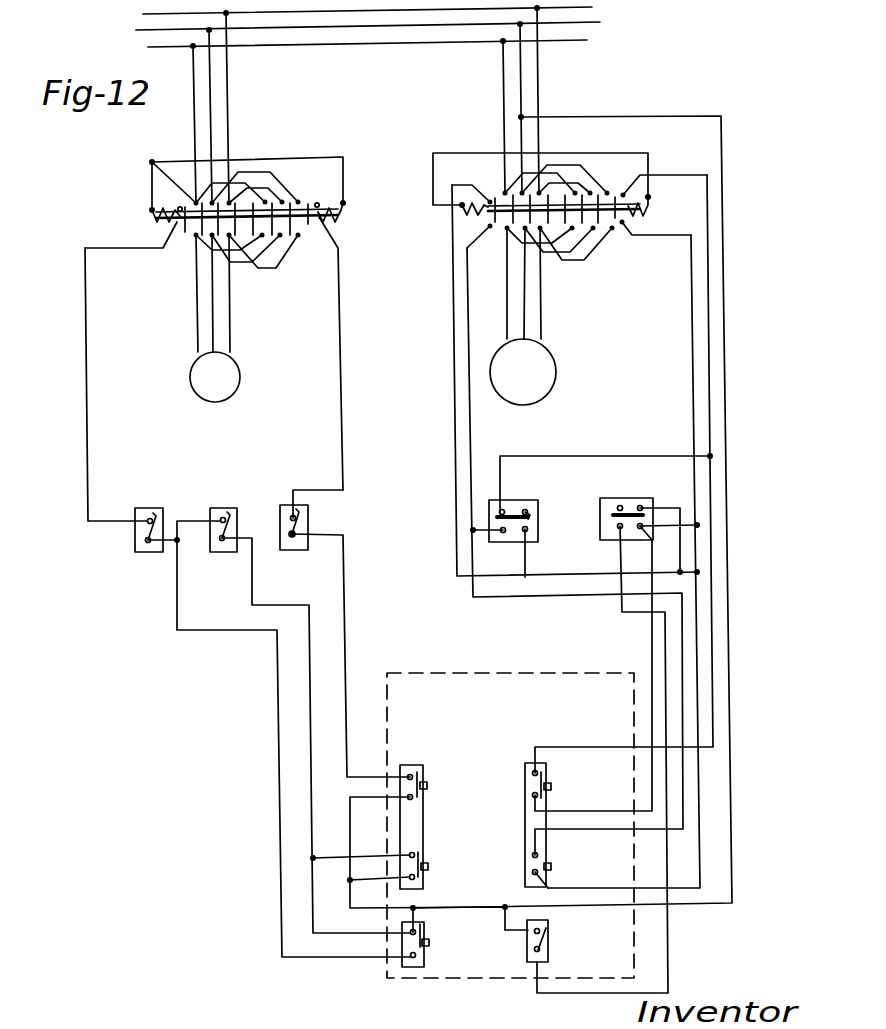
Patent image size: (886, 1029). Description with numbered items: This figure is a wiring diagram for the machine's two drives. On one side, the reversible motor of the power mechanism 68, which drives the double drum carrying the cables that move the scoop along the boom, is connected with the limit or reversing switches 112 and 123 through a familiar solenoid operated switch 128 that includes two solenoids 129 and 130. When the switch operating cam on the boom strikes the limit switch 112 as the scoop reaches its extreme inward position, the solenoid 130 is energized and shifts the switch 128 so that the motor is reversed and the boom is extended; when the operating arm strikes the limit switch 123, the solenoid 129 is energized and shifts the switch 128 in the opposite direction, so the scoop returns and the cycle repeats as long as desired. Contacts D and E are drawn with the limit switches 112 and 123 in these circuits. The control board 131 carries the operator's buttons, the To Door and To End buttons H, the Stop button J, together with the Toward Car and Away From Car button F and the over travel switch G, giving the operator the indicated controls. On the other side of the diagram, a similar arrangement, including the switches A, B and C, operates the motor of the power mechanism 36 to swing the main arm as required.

The power mechanism 36 is at (219, 327).
The power mechanism 68 is at (568, 322).
The solenoid operated switch 128 is at (558, 193).
The solenoid 129 is at (650, 211).
The solenoid 130 is at (466, 214).
The limit switch 112 is at (520, 523).
The limit switch 123 is at (621, 522).
The control board 131 is at (510, 825).
The switch A is at (223, 542).
The switch B is at (294, 540).
The switch C is at (149, 542).
The switch contacts D is at (525, 542).
The switch contacts E is at (613, 549).
The toward car / away from car push button F is at (429, 824).
The over travel switch G is at (433, 965).
The to door / to end push button H is at (518, 823).
The stop button J is at (521, 950).